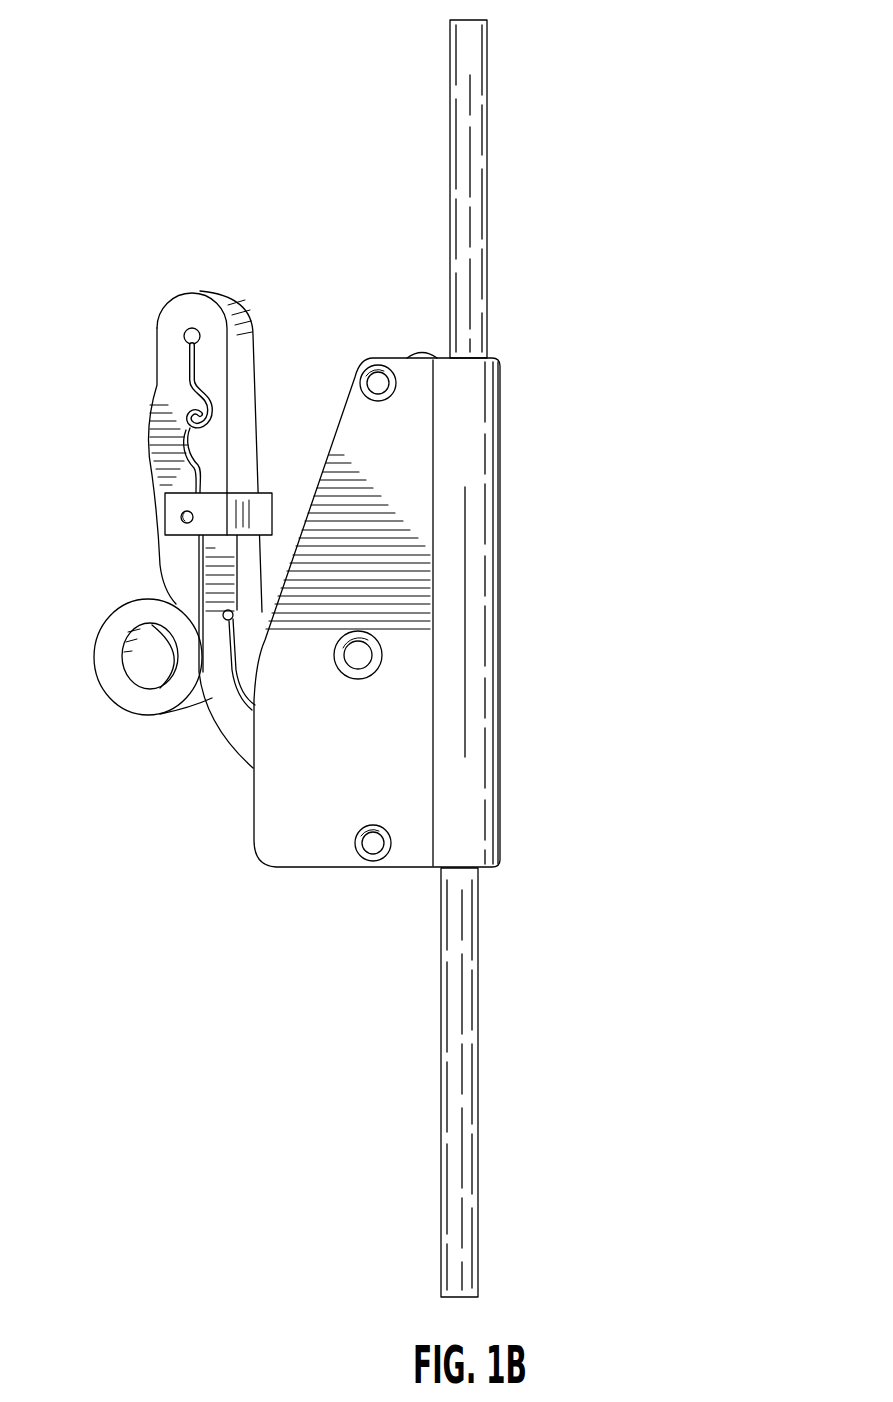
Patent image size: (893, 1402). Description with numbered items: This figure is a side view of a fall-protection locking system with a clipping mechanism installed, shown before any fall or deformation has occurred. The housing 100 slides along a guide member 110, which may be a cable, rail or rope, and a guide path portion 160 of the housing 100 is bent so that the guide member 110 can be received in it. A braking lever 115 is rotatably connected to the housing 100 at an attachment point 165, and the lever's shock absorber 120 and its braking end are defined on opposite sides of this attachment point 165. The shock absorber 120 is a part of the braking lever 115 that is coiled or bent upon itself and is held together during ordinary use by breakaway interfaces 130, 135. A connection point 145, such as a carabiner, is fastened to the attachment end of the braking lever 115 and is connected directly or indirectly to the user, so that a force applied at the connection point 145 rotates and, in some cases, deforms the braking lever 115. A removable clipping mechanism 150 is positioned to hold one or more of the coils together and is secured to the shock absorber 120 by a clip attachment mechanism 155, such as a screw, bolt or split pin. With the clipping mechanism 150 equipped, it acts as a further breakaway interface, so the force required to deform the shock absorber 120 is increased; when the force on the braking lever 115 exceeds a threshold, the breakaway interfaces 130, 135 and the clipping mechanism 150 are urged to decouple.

The housing 100 is at (373, 752).
The guide member 110 is at (465, 180).
The braking lever 115 is at (128, 338).
The shock absorber 120 is at (224, 258).
The breakaway interface 130 is at (203, 417).
The breakaway interface 135 is at (224, 614).
The connection point 145 is at (160, 657).
The clipping mechanism 150 is at (208, 505).
The clip attachment mechanism 155 is at (182, 517).
The guide path portion 160 is at (493, 415).
The attachment point 165 is at (362, 657).